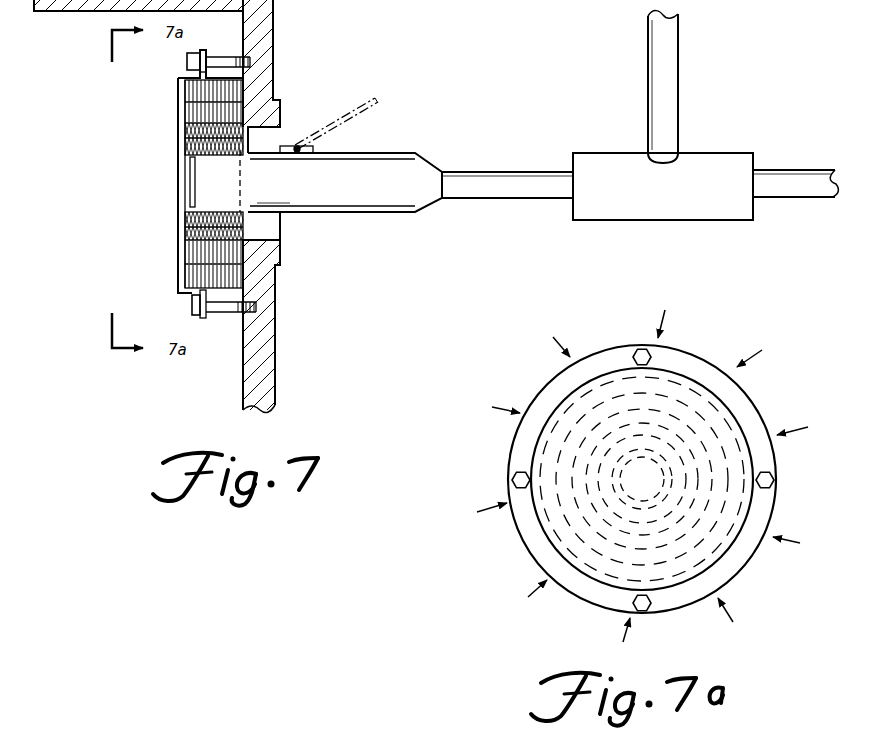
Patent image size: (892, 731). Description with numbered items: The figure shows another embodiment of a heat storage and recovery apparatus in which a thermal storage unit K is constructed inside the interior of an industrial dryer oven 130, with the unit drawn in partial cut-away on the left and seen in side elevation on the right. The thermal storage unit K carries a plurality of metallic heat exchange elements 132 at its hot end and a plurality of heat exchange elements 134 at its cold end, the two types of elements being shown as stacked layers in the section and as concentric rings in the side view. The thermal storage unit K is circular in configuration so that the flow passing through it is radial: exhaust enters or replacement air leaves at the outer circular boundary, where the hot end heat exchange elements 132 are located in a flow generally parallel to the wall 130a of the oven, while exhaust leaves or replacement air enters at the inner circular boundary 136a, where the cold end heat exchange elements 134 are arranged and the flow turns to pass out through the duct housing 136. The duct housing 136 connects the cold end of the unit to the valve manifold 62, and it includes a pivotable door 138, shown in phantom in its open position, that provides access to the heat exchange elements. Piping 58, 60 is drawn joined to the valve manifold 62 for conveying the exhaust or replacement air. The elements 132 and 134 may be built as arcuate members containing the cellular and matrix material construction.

In FIG. 7, the tube 58 is at (792, 170).
In FIG. 7, the pipe 60 is at (680, 30).
In FIG. 7, the valve manifold 62 is at (723, 153).
In FIG. 7, the industrial dryer oven 130 is at (274, 24).
In FIG. 7, the wall of the oven 130a is at (276, 338).
In FIG. 7, the metallic heat exchange elements 132 is at (188, 304).
In FIG. 7A, the metallic heat exchange elements 132 is at (733, 414).
In FIG. 7, the heat exchange elements 134 is at (228, 210).
In FIG. 7A, the heat exchange elements 134 is at (700, 462).
In FIG. 7, the duct housing 136 is at (346, 213).
In FIG. 7, the inner circular boundary 136a is at (274, 199).
In FIG. 7, the pivotable door 138 is at (368, 100).
In FIG. 7, the thermal storage unit K is at (178, 80).